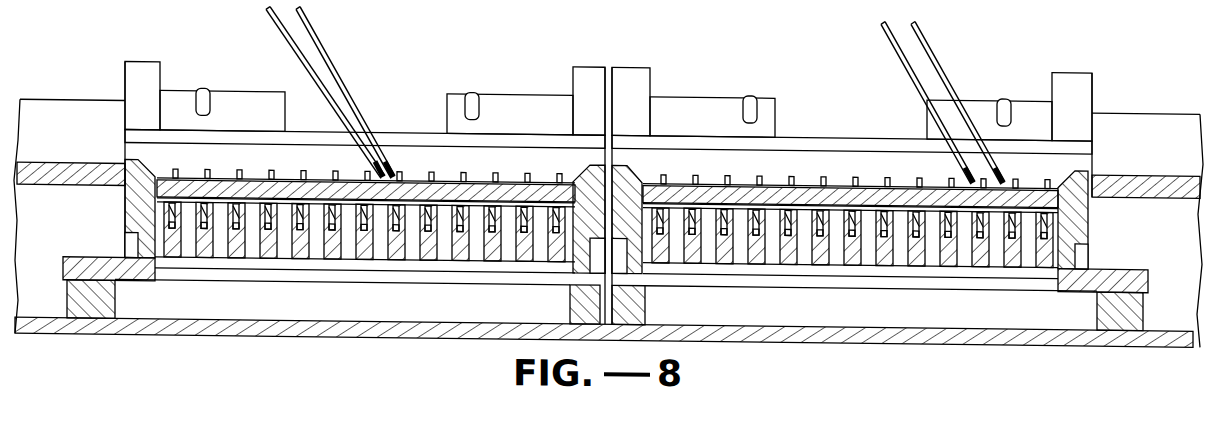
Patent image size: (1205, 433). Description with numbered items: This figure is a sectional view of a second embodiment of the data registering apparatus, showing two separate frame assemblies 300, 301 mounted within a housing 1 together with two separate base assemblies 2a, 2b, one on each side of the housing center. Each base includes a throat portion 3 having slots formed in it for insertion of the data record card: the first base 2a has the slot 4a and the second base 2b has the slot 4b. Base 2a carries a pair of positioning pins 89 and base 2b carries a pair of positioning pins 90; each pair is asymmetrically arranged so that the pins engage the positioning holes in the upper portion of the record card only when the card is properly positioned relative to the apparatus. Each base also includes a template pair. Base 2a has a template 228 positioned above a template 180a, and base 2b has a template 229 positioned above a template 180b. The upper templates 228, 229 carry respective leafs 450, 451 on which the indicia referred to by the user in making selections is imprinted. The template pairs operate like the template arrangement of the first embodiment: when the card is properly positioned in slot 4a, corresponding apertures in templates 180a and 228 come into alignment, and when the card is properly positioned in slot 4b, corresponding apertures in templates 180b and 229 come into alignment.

The housing 1 is at (942, 334).
The base assembly 2a is at (580, 262).
The base assembly 2b is at (818, 275).
The throat portion 3 is at (416, 72).
The slot 4a is at (377, 125).
The slot 4b is at (833, 128).
The positioning pins 89 is at (200, 85).
The positioning pins 90 is at (745, 86).
The template 180a is at (312, 186).
The template 180b is at (795, 184).
The template 228 is at (412, 170).
The template 229 is at (834, 173).
The frame assembly 300 is at (138, 165).
The frame assembly 301 is at (1110, 164).
The leaf 450 is at (316, 24).
The leaf 451 is at (930, 29).